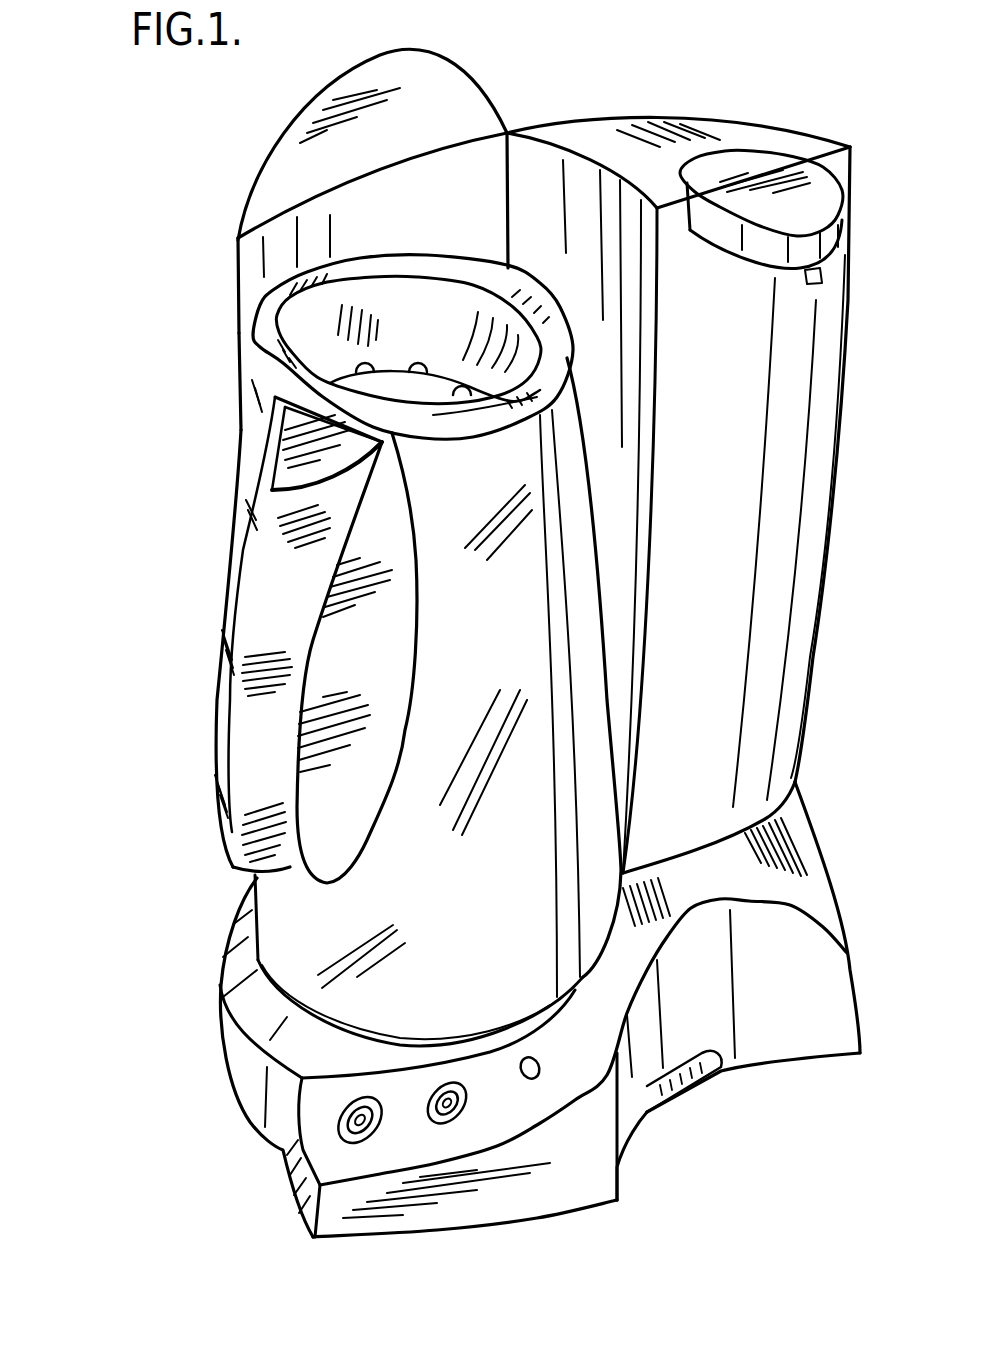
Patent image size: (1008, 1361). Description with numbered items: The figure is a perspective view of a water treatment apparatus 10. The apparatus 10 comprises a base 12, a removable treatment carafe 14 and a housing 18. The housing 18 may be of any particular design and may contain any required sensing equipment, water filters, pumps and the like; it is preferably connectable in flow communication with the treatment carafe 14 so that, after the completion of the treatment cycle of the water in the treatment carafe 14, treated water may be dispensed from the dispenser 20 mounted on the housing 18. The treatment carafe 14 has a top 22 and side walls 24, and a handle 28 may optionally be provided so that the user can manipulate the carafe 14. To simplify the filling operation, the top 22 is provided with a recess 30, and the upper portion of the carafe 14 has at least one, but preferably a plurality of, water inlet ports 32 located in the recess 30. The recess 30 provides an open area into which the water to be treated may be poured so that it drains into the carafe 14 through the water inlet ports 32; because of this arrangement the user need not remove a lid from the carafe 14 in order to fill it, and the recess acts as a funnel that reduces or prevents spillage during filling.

The water treatment apparatus 10 is at (94, 352).
The base 12 is at (160, 960).
The treatment carafe 14 is at (253, 428).
The housing 18 is at (482, 88).
The dispenser 20 is at (813, 283).
The top 22 is at (250, 336).
The side walls 24 is at (482, 916).
The handle 28 is at (246, 718).
The recess 30 is at (389, 350).
The water inlet ports 32 is at (422, 370).